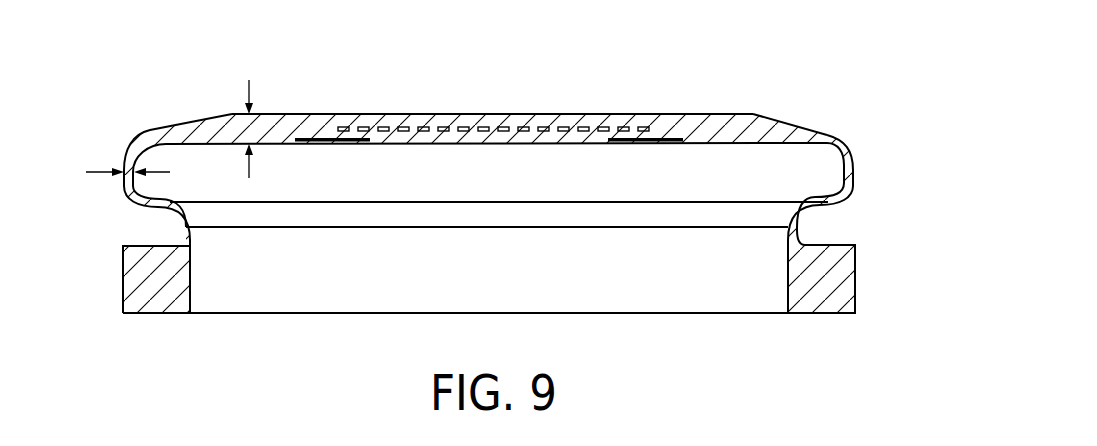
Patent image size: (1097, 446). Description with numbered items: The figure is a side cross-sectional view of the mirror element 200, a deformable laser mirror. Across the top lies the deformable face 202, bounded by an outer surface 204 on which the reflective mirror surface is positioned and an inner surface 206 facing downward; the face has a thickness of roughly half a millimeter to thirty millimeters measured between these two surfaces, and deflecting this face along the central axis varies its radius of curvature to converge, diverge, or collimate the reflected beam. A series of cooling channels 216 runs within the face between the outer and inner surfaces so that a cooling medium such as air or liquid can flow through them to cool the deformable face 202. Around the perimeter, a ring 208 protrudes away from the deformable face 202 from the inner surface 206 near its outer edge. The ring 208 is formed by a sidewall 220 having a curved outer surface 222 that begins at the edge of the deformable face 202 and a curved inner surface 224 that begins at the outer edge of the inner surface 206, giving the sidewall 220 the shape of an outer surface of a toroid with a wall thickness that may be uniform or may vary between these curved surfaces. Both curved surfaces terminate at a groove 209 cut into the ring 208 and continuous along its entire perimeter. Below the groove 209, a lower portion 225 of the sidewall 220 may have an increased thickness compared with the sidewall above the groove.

The mirror element 200 is at (516, 189).
The deformable face 202 is at (713, 128).
The outer surface 204 is at (592, 114).
The inner surface 206 is at (700, 143).
The ring 208 is at (847, 133).
The groove 209 is at (822, 227).
The cooling channels 216 is at (358, 127).
The sidewall 220 is at (845, 199).
The curved outer surface 222 is at (855, 158).
The curved inner surface 224 is at (840, 180).
The lower portion 225 is at (822, 295).